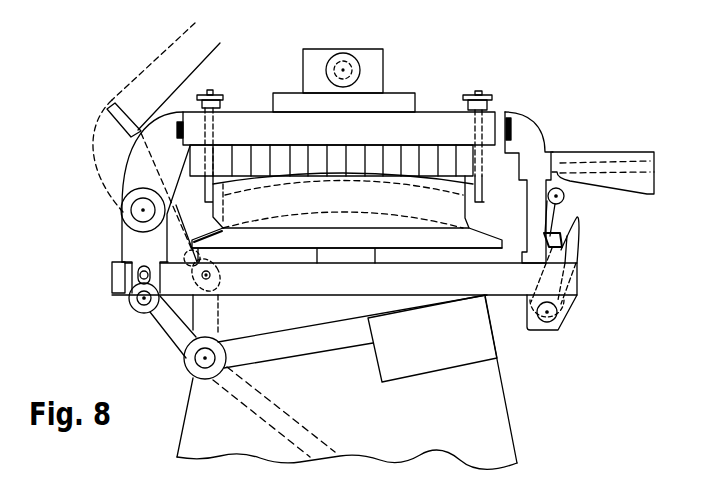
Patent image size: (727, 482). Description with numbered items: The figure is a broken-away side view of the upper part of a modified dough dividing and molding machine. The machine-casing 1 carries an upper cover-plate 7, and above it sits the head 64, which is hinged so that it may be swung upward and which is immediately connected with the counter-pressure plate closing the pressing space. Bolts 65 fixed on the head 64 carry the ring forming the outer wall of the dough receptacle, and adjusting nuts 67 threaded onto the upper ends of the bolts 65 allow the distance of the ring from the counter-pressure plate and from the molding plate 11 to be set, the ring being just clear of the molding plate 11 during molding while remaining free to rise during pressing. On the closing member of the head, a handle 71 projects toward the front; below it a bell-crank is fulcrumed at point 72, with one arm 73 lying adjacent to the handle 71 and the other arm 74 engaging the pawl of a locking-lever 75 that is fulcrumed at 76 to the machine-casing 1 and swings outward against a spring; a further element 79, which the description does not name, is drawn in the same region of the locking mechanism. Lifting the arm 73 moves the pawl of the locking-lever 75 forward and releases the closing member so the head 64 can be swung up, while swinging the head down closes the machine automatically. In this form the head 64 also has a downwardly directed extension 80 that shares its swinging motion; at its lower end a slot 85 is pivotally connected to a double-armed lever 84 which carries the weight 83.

The machine-casing 1 is at (512, 408).
The upper cover-plate 7 is at (577, 282).
The molding plate 11 is at (478, 238).
The head 64 is at (236, 118).
The bolts 65 is at (483, 167).
The adjusting nuts 67 is at (493, 103).
The handle 71 is at (655, 153).
The fulcrum point of bell-crank 72 is at (564, 197).
The arm of bell-crank 73 is at (648, 189).
The arm of bell-crank 74 is at (558, 214).
The locking-lever 75 is at (578, 225).
The fulcrum of locking-lever 76 is at (550, 315).
The bracket 79 is at (563, 244).
The downwardly directed extension 80 is at (135, 241).
The weight 83 is at (452, 360).
The lever 84 is at (277, 342).
The slot 85 is at (128, 298).